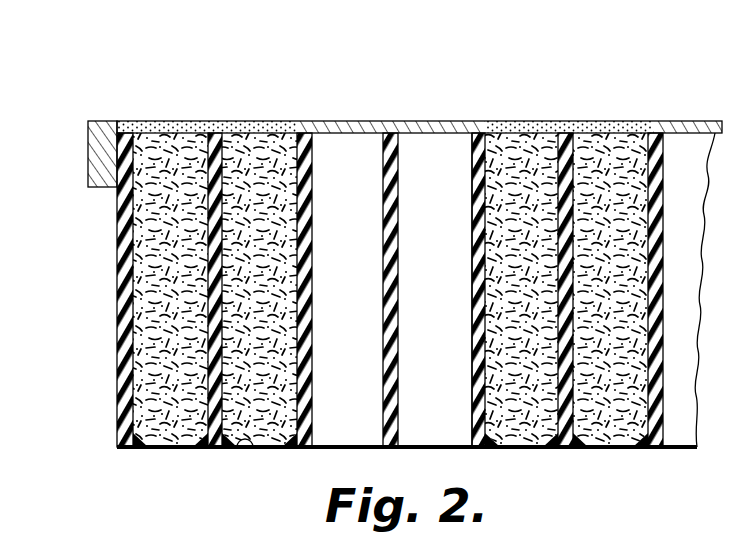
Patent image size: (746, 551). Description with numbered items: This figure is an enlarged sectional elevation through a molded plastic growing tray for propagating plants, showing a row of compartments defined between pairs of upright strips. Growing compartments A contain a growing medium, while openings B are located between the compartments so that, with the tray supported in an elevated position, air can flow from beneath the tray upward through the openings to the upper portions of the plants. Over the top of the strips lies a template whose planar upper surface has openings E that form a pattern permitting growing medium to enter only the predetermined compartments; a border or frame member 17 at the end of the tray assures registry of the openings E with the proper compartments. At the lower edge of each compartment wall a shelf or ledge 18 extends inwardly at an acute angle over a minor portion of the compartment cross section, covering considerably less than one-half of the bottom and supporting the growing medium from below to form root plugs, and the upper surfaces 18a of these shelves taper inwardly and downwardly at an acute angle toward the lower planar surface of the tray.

The border or frame member 17 is at (90, 152).
The shelf or ledge 18 is at (135, 449).
The upper surface of the shelf 18a is at (248, 451).
The growing compartment A is at (492, 153).
The opening B is at (423, 153).
The template opening E is at (622, 125).